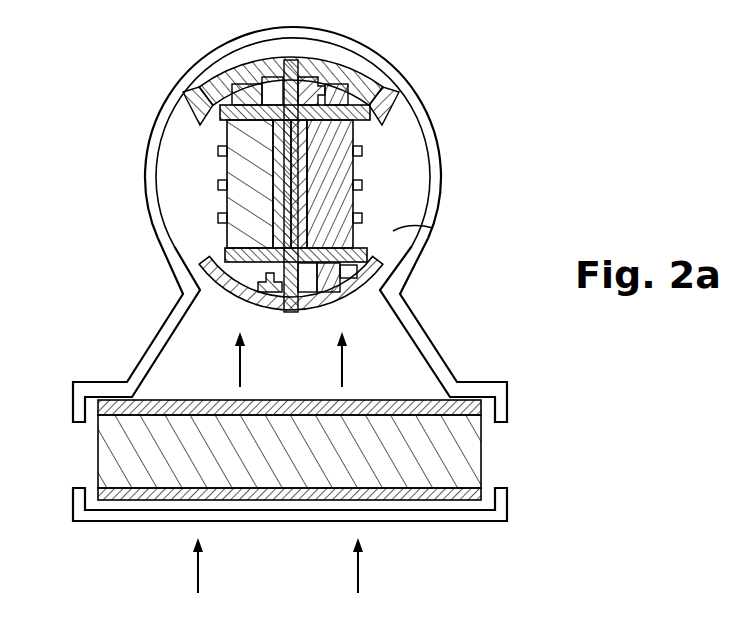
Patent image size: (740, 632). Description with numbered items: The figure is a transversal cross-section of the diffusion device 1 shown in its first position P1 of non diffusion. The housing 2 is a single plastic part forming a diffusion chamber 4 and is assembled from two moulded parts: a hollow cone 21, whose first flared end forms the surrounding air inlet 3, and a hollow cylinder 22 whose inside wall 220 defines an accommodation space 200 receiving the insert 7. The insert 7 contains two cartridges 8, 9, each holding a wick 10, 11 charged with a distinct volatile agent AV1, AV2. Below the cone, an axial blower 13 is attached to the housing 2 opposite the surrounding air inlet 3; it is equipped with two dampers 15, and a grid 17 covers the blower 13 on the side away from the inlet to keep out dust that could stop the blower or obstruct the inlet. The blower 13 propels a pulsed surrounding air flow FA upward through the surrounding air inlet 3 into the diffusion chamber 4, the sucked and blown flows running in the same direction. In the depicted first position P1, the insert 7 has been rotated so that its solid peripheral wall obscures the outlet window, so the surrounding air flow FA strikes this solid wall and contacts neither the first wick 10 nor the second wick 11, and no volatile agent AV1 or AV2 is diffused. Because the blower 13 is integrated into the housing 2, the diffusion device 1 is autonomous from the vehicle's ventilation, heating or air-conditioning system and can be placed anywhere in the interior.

The diffusion device 1 is at (88, 80).
The housing 2 is at (290, 413).
The surrounding air inlet 3 is at (215, 383).
The diffusion chamber 4 is at (318, 366).
The insert 7 is at (352, 68).
The first cartridge 8 is at (180, 119).
The second cartridge 9 is at (352, 116).
The first wick 10 is at (248, 162).
The second wick 11 is at (363, 184).
The blower 13 is at (455, 462).
The dampers 15 is at (458, 498).
The grid 17 is at (308, 523).
The hollow cone 21 is at (143, 350).
The hollow cylinder 22 is at (440, 143).
The accommodation space 200 is at (433, 228).
The inside wall 220 is at (165, 222).
The first position of non diffusion P1 is at (190, 185).
The first volatile agent AV1 is at (240, 204).
The second volatile agent AV2 is at (340, 196).
The surrounding air flow FA is at (297, 462).